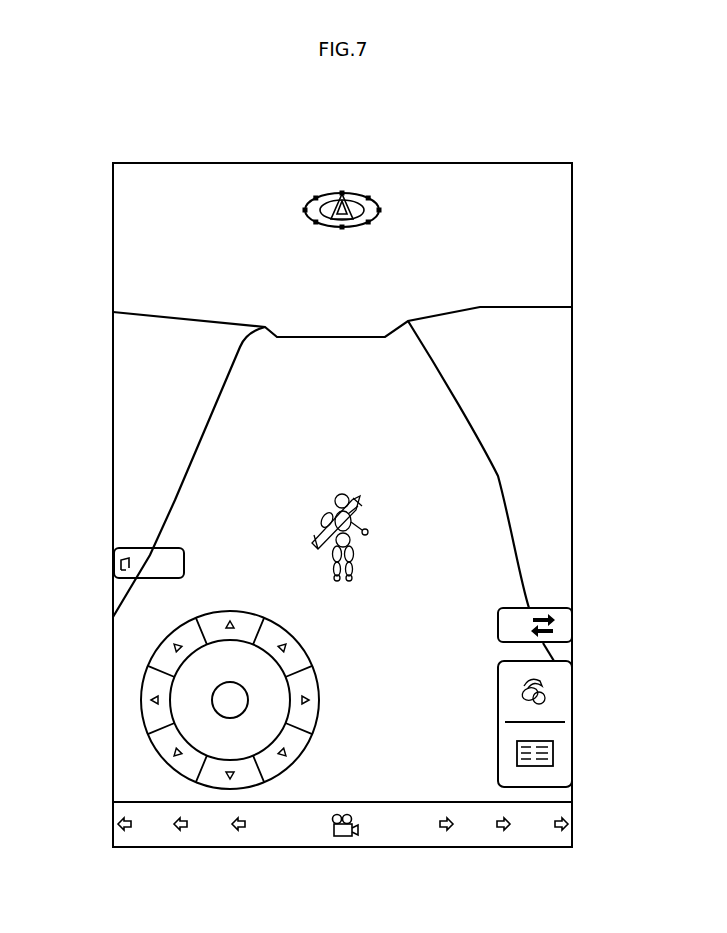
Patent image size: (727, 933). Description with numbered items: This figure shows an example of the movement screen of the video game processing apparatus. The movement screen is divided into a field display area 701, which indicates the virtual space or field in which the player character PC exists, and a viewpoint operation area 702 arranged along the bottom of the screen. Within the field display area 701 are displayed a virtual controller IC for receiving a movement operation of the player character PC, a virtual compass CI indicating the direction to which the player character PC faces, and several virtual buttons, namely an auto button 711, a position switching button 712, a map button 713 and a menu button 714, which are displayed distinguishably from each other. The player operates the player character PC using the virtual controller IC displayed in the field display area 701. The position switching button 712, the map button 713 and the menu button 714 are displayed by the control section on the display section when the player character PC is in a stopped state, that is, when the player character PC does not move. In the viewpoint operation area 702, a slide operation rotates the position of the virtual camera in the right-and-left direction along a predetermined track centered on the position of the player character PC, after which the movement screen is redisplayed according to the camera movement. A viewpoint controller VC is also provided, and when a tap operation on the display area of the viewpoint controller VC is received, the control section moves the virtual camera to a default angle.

The field display area 701 is at (559, 260).
The viewpoint operation area 702 is at (560, 797).
The auto button 711 is at (113, 549).
The position switching button 712 is at (560, 606).
The map button 713 is at (561, 693).
The menu button 714 is at (561, 748).
The virtual compass CI is at (330, 195).
The player character PC is at (350, 490).
The virtual controller IC is at (134, 697).
The viewpoint controller VC is at (340, 840).